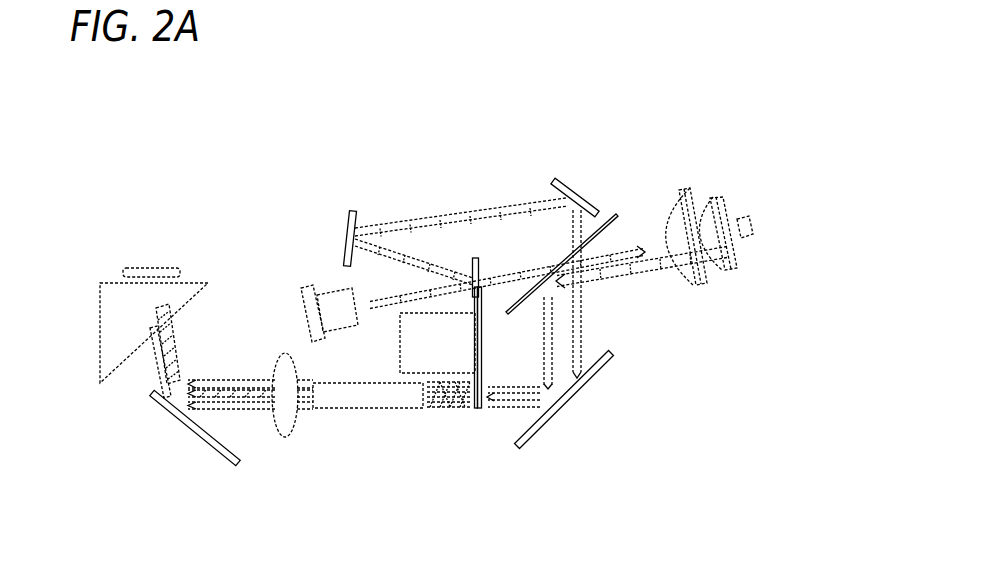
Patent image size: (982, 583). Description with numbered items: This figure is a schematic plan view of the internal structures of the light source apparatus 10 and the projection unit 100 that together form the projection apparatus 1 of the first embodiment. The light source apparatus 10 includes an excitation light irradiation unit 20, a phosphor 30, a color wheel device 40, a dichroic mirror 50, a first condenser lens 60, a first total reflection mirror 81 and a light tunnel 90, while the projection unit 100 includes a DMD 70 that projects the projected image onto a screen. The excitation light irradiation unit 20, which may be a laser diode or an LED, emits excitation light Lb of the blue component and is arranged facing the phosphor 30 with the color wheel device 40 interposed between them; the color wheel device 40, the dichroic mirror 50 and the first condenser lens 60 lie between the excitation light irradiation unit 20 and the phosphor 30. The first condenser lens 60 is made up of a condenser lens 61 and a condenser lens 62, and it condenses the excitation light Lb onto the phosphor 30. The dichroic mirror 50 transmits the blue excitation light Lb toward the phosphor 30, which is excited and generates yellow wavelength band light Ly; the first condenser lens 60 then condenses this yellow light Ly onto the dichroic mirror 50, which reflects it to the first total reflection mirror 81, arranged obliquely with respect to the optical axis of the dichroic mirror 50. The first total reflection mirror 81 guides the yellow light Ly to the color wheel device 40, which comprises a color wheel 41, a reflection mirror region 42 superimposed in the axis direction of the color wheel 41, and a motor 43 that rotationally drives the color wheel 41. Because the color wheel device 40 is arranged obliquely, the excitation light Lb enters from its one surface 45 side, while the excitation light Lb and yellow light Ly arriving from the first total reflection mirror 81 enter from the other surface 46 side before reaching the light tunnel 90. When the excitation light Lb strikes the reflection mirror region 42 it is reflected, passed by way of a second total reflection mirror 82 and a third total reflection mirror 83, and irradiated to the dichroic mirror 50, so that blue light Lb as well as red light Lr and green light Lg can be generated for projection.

The projection apparatus 1 is at (713, 112).
The light source apparatus 10 is at (742, 153).
The projection unit 100 is at (243, 180).
The excitation light irradiation unit 20 is at (302, 302).
The phosphor 30 is at (747, 218).
The color wheel device 40 is at (470, 487).
The color wheel 41 is at (477, 392).
The reflection mirror region 42 is at (480, 262).
The motor 43 is at (455, 398).
The one surface 45 is at (481, 400).
The other surface 46 is at (476, 402).
The dichroic mirror 50 is at (609, 210).
The first condenser lens 60 is at (713, 293).
The condenser lens 61 is at (690, 278).
The condenser lens 62 is at (726, 266).
The DMD 70 is at (157, 269).
The first total reflection mirror 81 is at (555, 418).
The second total reflection mirror 82 is at (357, 217).
The third total reflection mirror 83 is at (577, 184).
The light tunnel 90 is at (405, 411).
The wavelength band light of blue component Lb is at (197, 381).
The wavelength band light of green component Lg is at (223, 390).
The wavelength band light of red component Lr is at (252, 402).
The yellow wavelength band light Ly is at (543, 340).